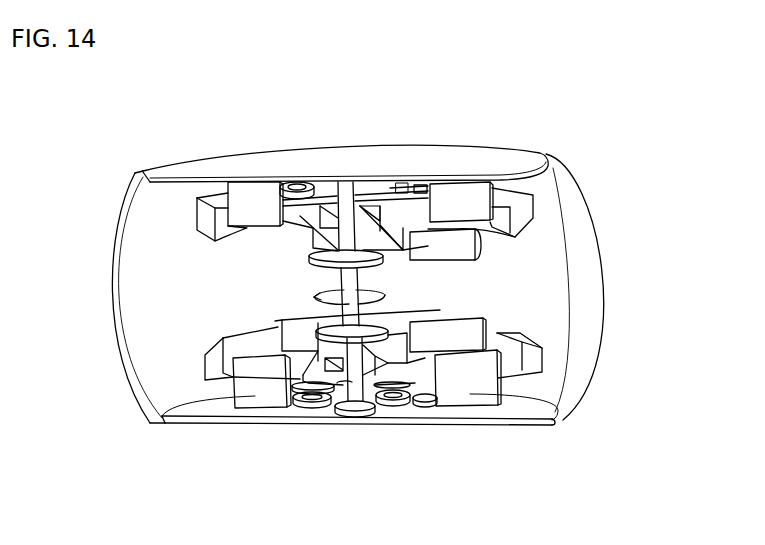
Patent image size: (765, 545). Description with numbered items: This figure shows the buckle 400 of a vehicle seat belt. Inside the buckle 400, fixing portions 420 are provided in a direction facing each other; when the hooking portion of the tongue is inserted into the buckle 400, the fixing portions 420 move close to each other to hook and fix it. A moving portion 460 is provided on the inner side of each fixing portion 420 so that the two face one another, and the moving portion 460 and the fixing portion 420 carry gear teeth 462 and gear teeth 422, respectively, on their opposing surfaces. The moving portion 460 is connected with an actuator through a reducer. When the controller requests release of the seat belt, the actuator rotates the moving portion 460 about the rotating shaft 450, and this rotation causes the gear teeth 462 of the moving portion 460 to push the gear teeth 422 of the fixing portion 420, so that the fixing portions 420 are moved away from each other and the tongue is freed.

The buckle 400 is at (218, 425).
The fixing portion 420 is at (523, 211).
The gear teeth 422 is at (377, 211).
The rotating shaft 450 is at (352, 283).
The moving portion 460 is at (470, 245).
The gear teeth 462 is at (400, 188).